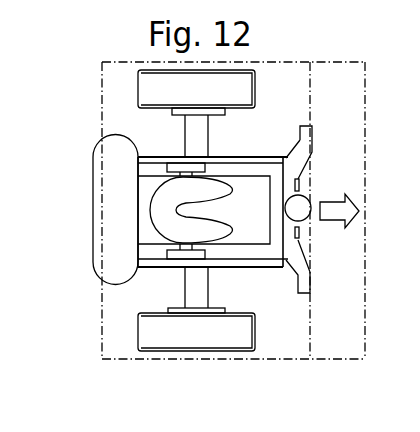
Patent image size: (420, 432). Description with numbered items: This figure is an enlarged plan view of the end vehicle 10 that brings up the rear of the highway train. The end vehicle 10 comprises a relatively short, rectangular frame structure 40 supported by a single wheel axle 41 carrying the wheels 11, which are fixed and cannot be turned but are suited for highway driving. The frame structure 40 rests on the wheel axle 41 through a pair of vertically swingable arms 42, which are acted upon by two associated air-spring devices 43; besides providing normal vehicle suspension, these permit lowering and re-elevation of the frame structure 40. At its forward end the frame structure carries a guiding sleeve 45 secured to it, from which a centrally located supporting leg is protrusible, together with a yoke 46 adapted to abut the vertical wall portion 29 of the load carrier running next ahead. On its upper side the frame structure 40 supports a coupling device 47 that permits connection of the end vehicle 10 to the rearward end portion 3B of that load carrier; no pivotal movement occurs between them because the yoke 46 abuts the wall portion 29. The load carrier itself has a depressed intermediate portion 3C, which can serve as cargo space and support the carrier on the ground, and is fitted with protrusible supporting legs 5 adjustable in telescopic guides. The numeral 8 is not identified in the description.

The rearward end portion 3B is at (123, 60).
The depressed intermediate portion 3C is at (358, 103).
The protrusible supporting legs 5 is at (276, 7).
The rail 8 is at (382, 7).
The end vehicle 10 is at (127, 124).
The wheels 11 is at (240, 83).
The vertical wall portion 29 is at (306, 313).
The frame structure 40 is at (246, 249).
The wheel axle 41 is at (256, 157).
The vertically swingable arms 42 is at (299, 126).
The air-spring devices 43 is at (97, 160).
The guiding sleeve 45 is at (311, 207).
The yoke 46 is at (312, 138).
The coupling device 47 is at (168, 232).